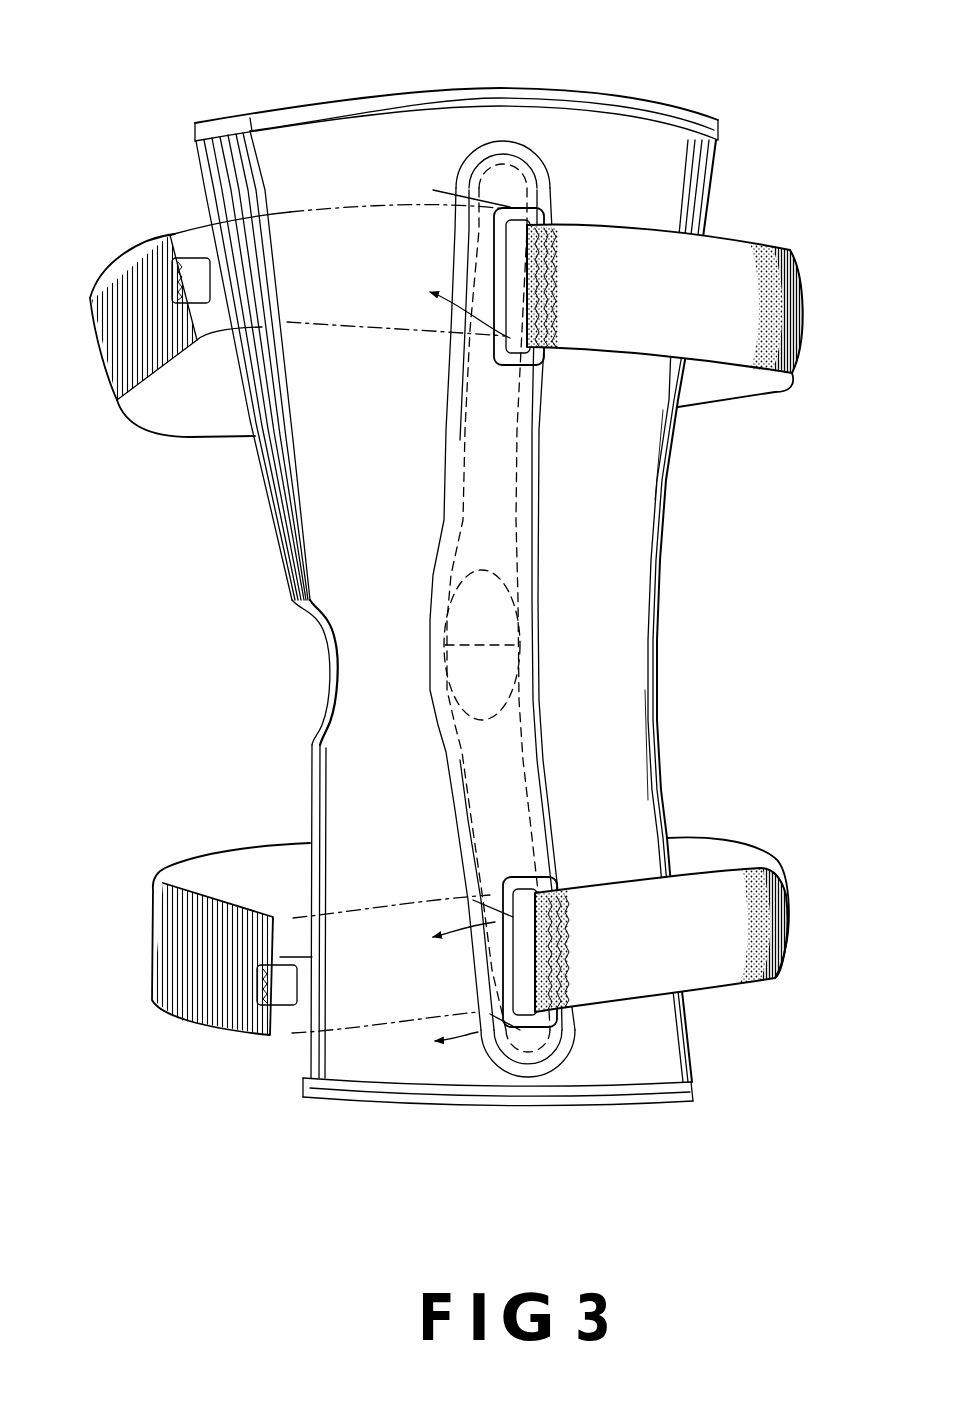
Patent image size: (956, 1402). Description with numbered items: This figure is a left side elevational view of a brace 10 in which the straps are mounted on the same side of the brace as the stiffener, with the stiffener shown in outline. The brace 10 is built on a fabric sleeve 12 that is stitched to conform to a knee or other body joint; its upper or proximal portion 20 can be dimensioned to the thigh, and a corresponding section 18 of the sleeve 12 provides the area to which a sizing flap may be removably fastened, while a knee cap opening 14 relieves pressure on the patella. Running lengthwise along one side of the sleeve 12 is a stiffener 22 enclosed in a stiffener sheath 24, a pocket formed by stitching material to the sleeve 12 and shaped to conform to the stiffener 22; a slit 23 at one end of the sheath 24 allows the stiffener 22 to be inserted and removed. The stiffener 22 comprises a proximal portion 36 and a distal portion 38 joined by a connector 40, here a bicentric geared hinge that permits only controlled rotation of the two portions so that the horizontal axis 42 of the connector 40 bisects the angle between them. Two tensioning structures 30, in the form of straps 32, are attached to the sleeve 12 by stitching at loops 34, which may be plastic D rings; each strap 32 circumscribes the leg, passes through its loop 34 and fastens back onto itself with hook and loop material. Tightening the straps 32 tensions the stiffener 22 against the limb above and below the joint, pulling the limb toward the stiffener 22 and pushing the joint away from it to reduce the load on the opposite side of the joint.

The brace 10 is at (188, 65).
The sleeve 12 is at (636, 188).
The knee cap opening 14 is at (322, 655).
The section 18 is at (215, 186).
The proximal portion 20 is at (375, 150).
The stiffener 22 is at (463, 522).
The slit 23 is at (512, 200).
The stiffener sheath 24 is at (520, 512).
The tensioning structures 30 is at (646, 308).
The straps 32 is at (748, 255).
The loops 34 is at (513, 358).
The proximal portion 36 is at (490, 403).
The distal portion 38 is at (497, 838).
The connector 40 is at (505, 617).
The horizontal axis 42 is at (488, 647).